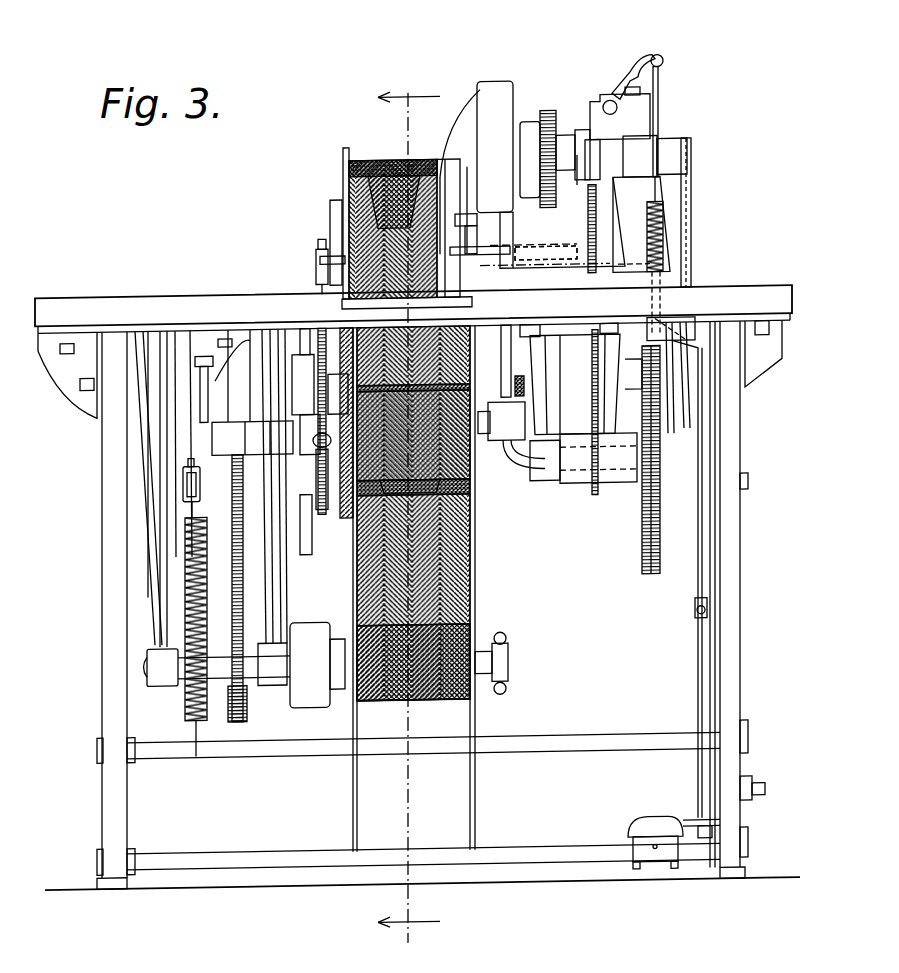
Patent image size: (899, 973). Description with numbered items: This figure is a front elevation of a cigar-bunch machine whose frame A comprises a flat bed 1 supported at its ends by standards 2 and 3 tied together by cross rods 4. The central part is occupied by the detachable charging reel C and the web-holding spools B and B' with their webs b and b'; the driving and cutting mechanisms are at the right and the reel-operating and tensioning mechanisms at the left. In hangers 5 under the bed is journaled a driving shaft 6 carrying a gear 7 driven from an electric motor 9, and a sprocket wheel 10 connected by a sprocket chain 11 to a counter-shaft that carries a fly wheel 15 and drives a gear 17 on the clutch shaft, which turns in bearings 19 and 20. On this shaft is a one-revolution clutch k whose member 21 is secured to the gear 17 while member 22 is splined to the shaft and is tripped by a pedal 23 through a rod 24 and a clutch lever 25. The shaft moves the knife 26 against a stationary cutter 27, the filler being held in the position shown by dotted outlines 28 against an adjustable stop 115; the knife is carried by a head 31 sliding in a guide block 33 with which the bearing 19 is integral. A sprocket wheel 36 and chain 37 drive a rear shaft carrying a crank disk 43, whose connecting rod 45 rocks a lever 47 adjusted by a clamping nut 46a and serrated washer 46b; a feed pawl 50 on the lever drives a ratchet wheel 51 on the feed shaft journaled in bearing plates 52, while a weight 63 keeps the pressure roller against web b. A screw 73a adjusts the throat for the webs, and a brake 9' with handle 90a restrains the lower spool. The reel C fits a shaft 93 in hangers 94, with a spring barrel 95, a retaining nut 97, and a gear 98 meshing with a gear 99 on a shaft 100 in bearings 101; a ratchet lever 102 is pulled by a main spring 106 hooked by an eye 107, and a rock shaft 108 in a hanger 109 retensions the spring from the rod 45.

The table or bed 1 is at (135, 310).
The standard 2 is at (108, 640).
The standard 3 is at (723, 686).
The cross rods 4 is at (549, 750).
The hangers 5 is at (755, 447).
The driving shaft 6 is at (535, 480).
The gear 7 is at (646, 520).
The electric motor 9 is at (570, 379).
The sprocket wheel 10 is at (595, 500).
The sprocket chain 11 is at (594, 240).
The fly wheel 15 is at (542, 124).
The gear 17 is at (560, 135).
The bearing 19 is at (521, 168).
The bearing 20 is at (640, 160).
The clutch member 21 is at (539, 257).
The clutch member 22 is at (620, 113).
The pedal 23 is at (652, 829).
The rod 24 is at (660, 90).
The clutch lever 25 is at (637, 70).
The movable knife or cutter 26 is at (384, 258).
The stationary cutter 27 is at (415, 290).
The dotted outlines 28 is at (546, 253).
The head 31 is at (466, 146).
The guide block 33 is at (492, 100).
The driving sprocket wheel 36 is at (689, 168).
The chain 37 is at (692, 233).
The crank disk 43 is at (332, 425).
The connecting rod 45 is at (306, 441).
The clamping nut 46a is at (285, 465).
The serrated washer 46b is at (306, 479).
The lever 47 is at (210, 440).
The feed pawl 50 is at (300, 380).
The ratchet wheel 51 is at (311, 326).
The bearing plates 52 is at (435, 343).
The weight 63 is at (410, 507).
The screw 73a is at (321, 260).
The handle 90a is at (524, 395).
The shaft 93 is at (147, 670).
The hangers 94 is at (158, 606).
The spring barrel 95 is at (312, 705).
The nut 97 is at (508, 672).
The gear 98 is at (247, 715).
The gear 99 is at (236, 570).
The shaft 100 is at (283, 548).
The bearings 101 is at (148, 510).
The ratchet lever 102 is at (190, 480).
The main spring 106 is at (192, 700).
The eye 107 is at (183, 490).
The rock shaft 108 is at (196, 432).
The hanger 109 is at (246, 388).
The stop 115 is at (375, 230).
The frame A is at (71, 547).
The spool B is at (481, 535).
The spool B' is at (398, 203).
The charging reel C is at (352, 791).
The web b is at (413, 513).
The web b' is at (377, 348).
The one-revolution clutch k is at (578, 170).
The friction brake 9' is at (487, 478).